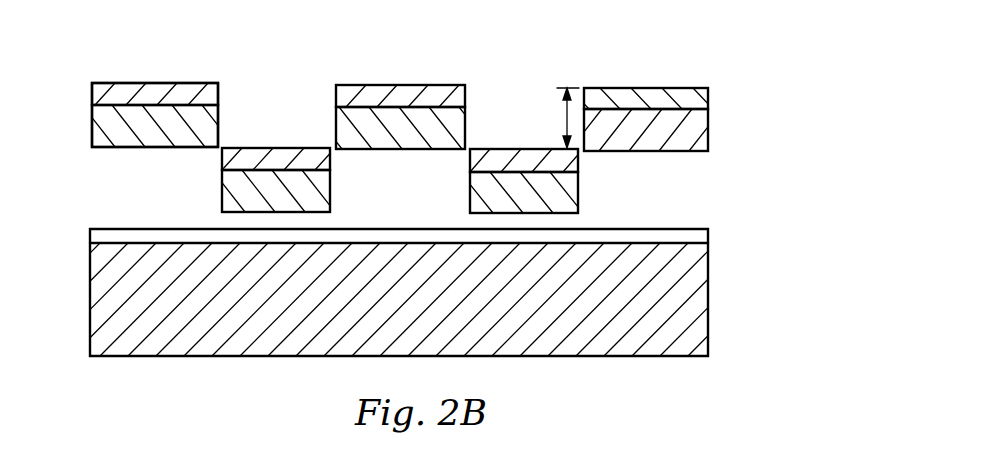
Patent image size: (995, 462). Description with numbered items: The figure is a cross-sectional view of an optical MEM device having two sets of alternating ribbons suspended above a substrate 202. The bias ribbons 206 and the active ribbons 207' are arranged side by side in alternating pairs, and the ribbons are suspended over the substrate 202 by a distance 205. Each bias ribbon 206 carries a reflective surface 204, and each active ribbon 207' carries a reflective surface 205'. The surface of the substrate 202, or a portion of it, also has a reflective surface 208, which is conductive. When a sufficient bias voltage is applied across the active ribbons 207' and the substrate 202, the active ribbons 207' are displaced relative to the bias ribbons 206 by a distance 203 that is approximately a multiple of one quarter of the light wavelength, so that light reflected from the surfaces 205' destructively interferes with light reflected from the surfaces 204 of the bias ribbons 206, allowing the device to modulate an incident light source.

The substrate 202 is at (708, 303).
The reflective surface of the substrate 208 is at (708, 236).
The bias ribbons 206 is at (133, 147).
The reflective surface of the bias ribbons 204 is at (147, 82).
The distance 205 is at (116, 139).
The reflective surface of the active ribbons 205' is at (400, 134).
The active ribbons 207' is at (437, 191).
The displacement distance 203 is at (552, 116).